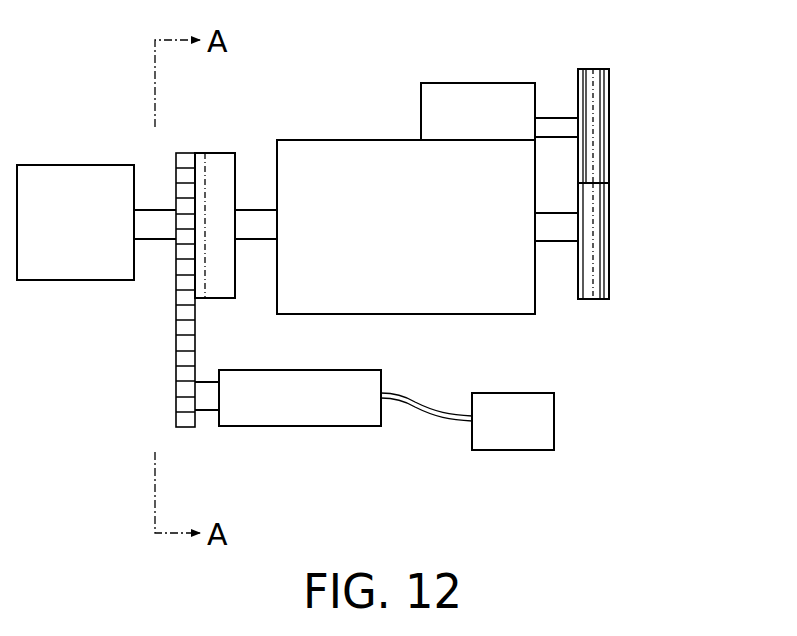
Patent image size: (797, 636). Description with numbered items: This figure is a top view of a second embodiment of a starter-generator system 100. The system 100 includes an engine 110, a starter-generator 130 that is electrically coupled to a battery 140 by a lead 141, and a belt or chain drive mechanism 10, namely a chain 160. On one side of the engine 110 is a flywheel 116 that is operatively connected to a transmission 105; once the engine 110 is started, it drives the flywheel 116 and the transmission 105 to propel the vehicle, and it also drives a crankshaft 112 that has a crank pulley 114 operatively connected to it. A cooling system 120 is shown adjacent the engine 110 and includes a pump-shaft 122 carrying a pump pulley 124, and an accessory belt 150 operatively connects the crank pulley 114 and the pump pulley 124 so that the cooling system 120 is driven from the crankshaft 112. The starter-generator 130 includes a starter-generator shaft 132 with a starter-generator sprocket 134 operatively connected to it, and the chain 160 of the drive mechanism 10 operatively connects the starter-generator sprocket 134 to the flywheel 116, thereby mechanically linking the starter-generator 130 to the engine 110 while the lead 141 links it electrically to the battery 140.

The belt or chain drive mechanism 10 is at (170, 301).
The starter-generator system 100 is at (350, 357).
The transmission 105 is at (62, 165).
The engine 110 is at (324, 140).
The crankshaft 112 is at (556, 242).
The crank pulley 114 is at (611, 204).
The flywheel 116 is at (206, 153).
The cooling system 120 is at (486, 83).
The pump-shaft 122 is at (552, 118).
The pump pulley 124 is at (611, 92).
The starter-generator 130 is at (300, 426).
The starter-generator shaft 132 is at (208, 411).
The starter-generator sprocket 134 is at (176, 403).
The battery 140 is at (554, 418).
The lead 141 is at (428, 421).
The accessory belt 150 is at (616, 151).
The chain 160 is at (176, 331).